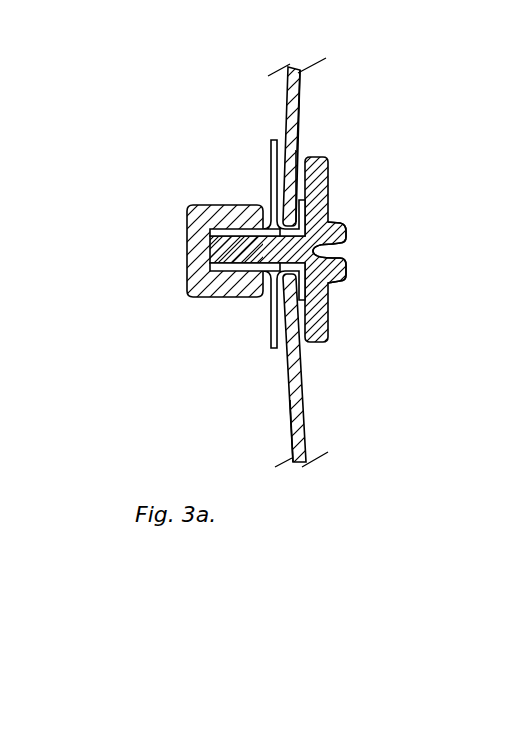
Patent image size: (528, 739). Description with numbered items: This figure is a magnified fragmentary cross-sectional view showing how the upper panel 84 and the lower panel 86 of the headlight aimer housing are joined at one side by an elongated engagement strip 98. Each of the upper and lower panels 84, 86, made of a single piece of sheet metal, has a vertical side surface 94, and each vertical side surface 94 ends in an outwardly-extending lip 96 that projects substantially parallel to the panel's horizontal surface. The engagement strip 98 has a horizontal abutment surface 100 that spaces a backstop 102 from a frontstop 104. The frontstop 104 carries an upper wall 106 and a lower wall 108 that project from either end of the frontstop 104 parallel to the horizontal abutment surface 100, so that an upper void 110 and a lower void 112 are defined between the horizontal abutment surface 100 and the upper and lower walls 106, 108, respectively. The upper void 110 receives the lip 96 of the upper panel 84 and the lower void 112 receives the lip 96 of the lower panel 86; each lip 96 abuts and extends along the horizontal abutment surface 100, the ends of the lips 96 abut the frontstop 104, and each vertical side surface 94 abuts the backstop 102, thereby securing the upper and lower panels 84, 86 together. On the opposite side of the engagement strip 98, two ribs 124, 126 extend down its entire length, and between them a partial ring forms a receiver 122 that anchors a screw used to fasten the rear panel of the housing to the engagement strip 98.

The upper panel 84 is at (310, 97).
The lower panel 86 is at (278, 421).
The vertical side surface 94 is at (299, 120).
The lip 96 is at (270, 200).
The elongated engagement strip 98 is at (180, 236).
The horizontal abutment surface 100 is at (187, 212).
The backstop 102 is at (320, 186).
The frontstop 104 is at (196, 268).
The upper wall 106 is at (204, 213).
The lower wall 108 is at (222, 270).
The upper void 110 is at (240, 240).
The lower void 112 is at (246, 272).
The receiver 122 is at (336, 252).
The rib 124 is at (347, 229).
The rib 126 is at (342, 273).